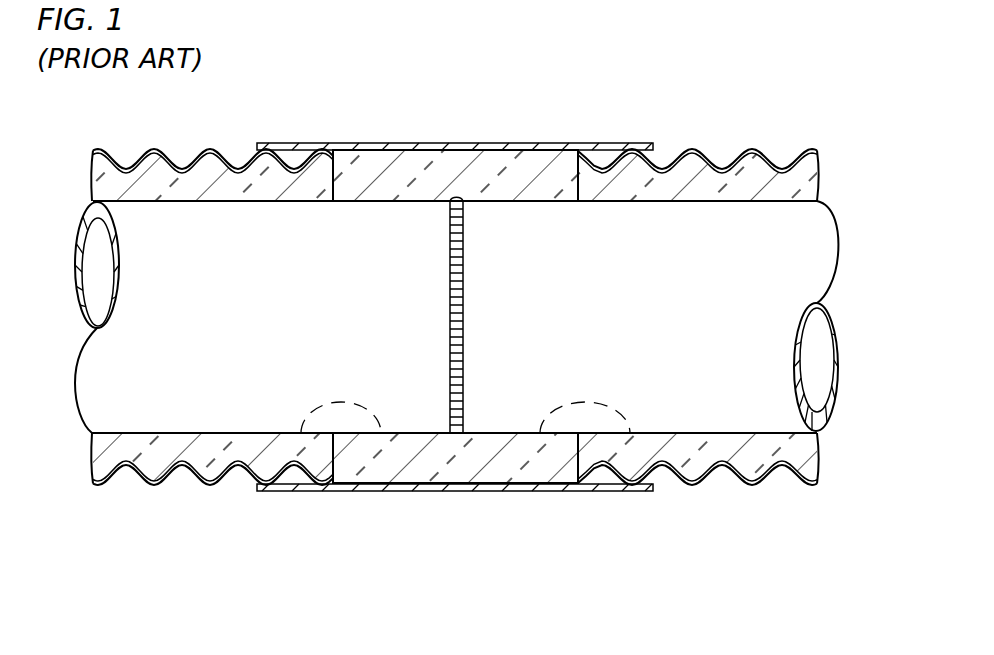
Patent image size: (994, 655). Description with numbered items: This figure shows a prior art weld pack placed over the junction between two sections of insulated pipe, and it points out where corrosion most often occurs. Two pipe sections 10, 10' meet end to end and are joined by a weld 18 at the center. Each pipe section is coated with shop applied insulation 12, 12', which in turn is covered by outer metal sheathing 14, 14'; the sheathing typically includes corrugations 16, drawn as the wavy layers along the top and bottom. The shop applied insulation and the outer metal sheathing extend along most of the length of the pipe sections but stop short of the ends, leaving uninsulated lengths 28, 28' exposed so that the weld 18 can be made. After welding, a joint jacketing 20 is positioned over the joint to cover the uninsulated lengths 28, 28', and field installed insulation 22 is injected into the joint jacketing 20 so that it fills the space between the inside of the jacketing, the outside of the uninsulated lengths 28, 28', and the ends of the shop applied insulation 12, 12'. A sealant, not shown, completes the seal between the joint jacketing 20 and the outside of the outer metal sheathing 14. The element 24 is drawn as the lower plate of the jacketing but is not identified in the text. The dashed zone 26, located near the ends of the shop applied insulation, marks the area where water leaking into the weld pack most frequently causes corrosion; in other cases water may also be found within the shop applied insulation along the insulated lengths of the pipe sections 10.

The pipe section 10 is at (480, 290).
The pipe section 10' is at (89, 297).
The shop applied insulation 12 is at (698, 480).
The shop applied insulation 12' is at (196, 484).
The outer metal sheathing 14 is at (700, 152).
The outer metal sheathing 14' is at (213, 155).
The corrugations 16 is at (173, 483).
The weld 18 is at (465, 333).
The joint jacketing 20 is at (402, 143).
The field installed insulation 22 is at (512, 160).
The lower plate 24 is at (352, 487).
The zone 26 is at (340, 405).
The uninsulated length 28 is at (547, 204).
The uninsulated length 28' is at (350, 205).